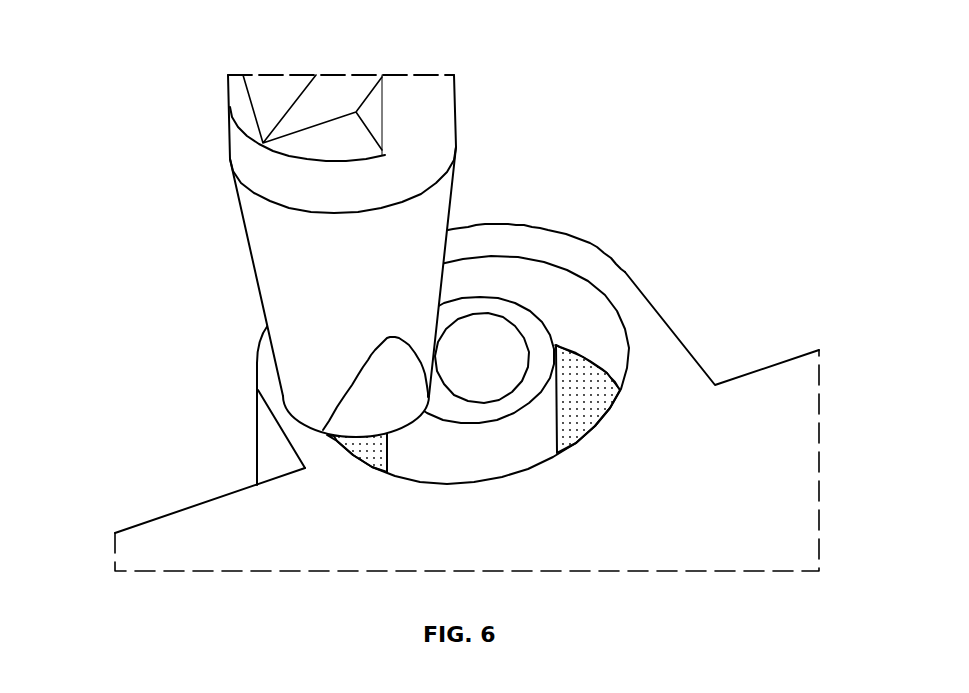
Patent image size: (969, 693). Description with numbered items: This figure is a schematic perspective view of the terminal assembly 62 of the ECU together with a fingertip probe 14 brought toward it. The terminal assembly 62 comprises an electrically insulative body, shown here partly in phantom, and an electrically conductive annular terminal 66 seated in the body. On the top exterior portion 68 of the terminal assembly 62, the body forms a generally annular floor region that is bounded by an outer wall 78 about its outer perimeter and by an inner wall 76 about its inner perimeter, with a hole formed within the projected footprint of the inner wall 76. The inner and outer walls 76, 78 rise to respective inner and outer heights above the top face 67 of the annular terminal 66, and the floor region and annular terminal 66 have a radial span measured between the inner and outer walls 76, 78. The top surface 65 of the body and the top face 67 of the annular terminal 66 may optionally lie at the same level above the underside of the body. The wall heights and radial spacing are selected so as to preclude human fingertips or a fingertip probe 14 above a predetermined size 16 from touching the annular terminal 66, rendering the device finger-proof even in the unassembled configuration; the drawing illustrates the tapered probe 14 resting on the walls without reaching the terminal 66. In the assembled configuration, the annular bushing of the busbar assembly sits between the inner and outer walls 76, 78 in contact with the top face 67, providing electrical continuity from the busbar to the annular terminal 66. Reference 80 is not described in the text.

The fingertip probe 14 is at (243, 155).
The predetermined size 16 is at (165, 193).
The terminal assembly 62 is at (147, 330).
The top surface 65 is at (255, 525).
The annular terminal 66 is at (582, 377).
The top face 67 is at (582, 377).
The top exterior portion 68 is at (737, 302).
The inner wall 76 is at (495, 308).
The outer wall 78 is at (560, 294).
The boss 80 is at (607, 180).